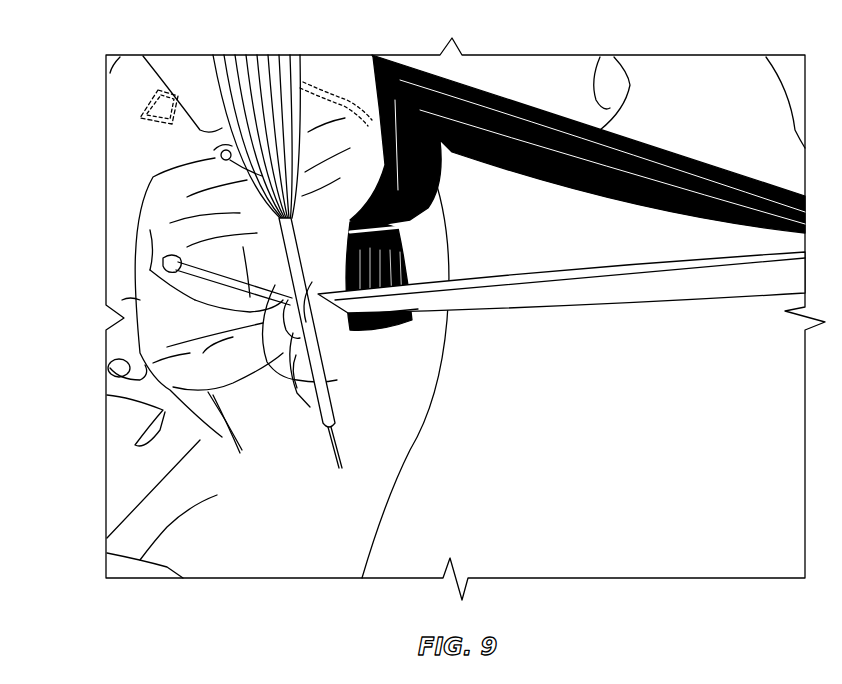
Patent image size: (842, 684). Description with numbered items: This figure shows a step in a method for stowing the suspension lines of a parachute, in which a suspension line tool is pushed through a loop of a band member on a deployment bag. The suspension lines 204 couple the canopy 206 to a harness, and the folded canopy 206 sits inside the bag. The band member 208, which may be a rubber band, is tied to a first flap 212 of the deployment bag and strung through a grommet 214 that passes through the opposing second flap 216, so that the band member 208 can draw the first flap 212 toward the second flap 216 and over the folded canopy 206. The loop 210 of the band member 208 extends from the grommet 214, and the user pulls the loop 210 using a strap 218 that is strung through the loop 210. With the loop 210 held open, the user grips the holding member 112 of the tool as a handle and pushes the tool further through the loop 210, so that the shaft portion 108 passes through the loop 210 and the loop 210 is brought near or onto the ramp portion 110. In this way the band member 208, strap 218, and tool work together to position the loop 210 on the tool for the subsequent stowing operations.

The shaft portion 108 is at (318, 346).
The ramp portion 110 is at (265, 150).
The holding member 112 is at (243, 97).
The suspension lines 204 is at (660, 168).
The canopy 206 is at (252, 425).
The band member 208 is at (165, 262).
The loop 210 is at (380, 268).
The first flap 212 is at (122, 300).
The grommet 214 is at (310, 375).
The second flap 216 is at (297, 388).
The strap 218 is at (583, 310).